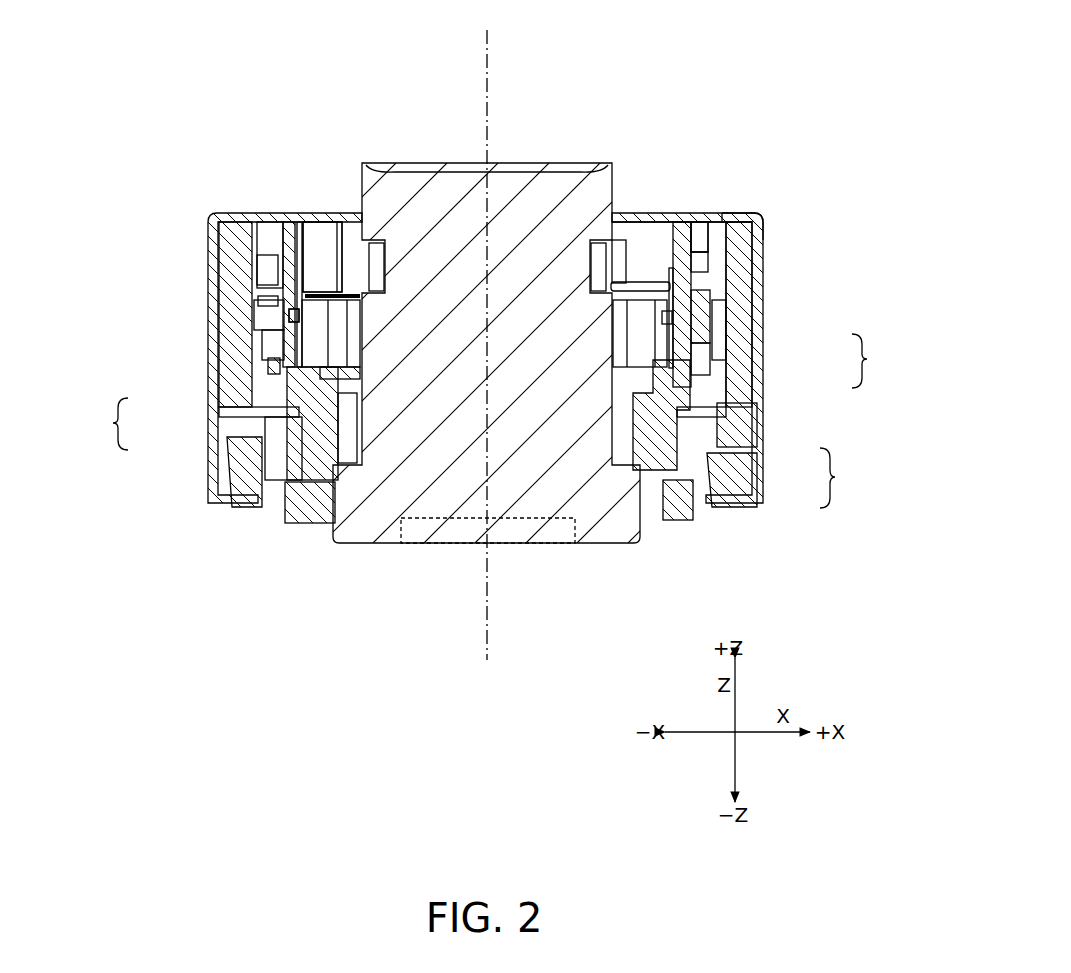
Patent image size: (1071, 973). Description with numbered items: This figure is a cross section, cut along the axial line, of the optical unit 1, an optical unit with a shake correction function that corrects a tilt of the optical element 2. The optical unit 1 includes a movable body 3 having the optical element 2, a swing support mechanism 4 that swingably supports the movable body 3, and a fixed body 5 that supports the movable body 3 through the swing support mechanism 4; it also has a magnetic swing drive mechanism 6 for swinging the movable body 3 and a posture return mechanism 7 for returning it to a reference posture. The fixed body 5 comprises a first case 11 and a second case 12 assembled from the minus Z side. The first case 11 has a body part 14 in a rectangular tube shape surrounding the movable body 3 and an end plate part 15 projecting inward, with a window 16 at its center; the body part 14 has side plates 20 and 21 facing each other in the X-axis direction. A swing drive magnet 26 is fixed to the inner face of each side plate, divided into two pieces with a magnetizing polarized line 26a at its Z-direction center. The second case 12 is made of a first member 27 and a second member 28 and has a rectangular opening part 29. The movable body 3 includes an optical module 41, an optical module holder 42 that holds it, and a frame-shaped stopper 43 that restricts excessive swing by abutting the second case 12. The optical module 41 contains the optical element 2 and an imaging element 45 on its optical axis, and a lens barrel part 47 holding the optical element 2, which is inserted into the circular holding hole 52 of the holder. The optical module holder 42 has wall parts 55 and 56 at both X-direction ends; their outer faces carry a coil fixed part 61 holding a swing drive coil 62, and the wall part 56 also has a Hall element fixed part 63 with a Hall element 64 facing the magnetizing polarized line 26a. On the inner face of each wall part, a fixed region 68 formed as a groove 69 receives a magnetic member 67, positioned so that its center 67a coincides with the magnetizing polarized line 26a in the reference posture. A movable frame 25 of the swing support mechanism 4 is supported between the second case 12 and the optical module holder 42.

The optical unit 1 is at (282, 88).
The optical element 2 is at (526, 161).
The movable body 3 is at (565, 160).
The swing support mechanism 4 is at (645, 290).
The fixed body 5 is at (764, 216).
The magnetic swing drive mechanism 6 is at (488, 392).
The posture return mechanism 7 is at (268, 262).
The first case 11 is at (762, 280).
The second case 12 is at (841, 478).
The body part 14 is at (748, 262).
The end plate part 15 is at (762, 215).
The window 16 is at (728, 215).
The side plate 20 is at (738, 412).
The side plate 21 is at (222, 380).
The movable frame 25 is at (622, 285).
The swing drive magnet 26 is at (228, 388).
The magnetizing polarized line 26a is at (255, 312).
The first member 27 is at (740, 490).
The second member 28 is at (740, 440).
The rectangular opening part 29 is at (272, 500).
The optical module 41 is at (627, 278).
The optical module holder 42 is at (672, 392).
The stopper 43 is at (690, 512).
The imaging element 45 is at (558, 548).
The lens barrel part 47 is at (342, 232).
The circular holding hole 52 is at (360, 383).
The wall part 55 is at (690, 223).
The wall part 56 is at (285, 290).
The coil fixed part 61 is at (272, 330).
The swing drive coil 62 is at (276, 373).
The Hall element fixed part 63 is at (262, 305).
The Hall element 64 is at (298, 316).
The magnetic member 67 is at (300, 235).
The center of the magnetic member 67a is at (300, 317).
The fixed region 68 is at (304, 238).
The groove 69 is at (486, 203).